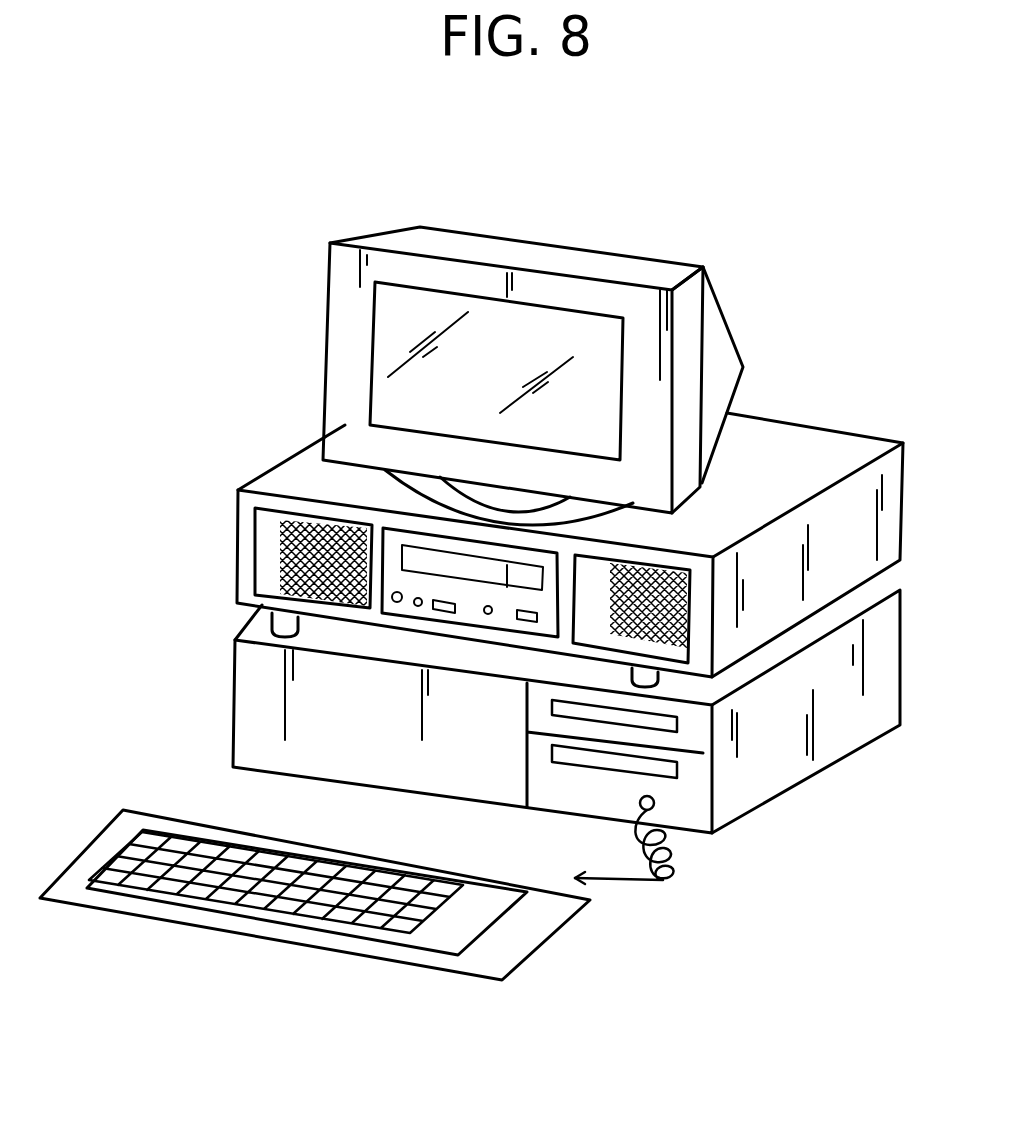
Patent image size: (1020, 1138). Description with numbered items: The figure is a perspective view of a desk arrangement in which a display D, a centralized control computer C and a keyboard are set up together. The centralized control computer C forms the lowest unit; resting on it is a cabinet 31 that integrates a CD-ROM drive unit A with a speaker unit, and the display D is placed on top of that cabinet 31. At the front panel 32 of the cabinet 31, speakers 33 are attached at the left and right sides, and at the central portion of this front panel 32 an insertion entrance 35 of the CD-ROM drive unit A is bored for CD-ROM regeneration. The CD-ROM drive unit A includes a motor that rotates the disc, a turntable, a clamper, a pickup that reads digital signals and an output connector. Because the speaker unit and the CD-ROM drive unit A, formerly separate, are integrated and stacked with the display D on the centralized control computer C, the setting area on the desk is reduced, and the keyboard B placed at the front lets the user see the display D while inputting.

The display D is at (548, 283).
The CD-ROM drive unit A is at (509, 547).
The cabinet 31 is at (283, 483).
The speakers 33 is at (270, 553).
The front panel 32 is at (250, 602).
The insertion entrance 35 is at (460, 627).
The centralized control computer C is at (778, 763).
The keyboard B is at (247, 918).